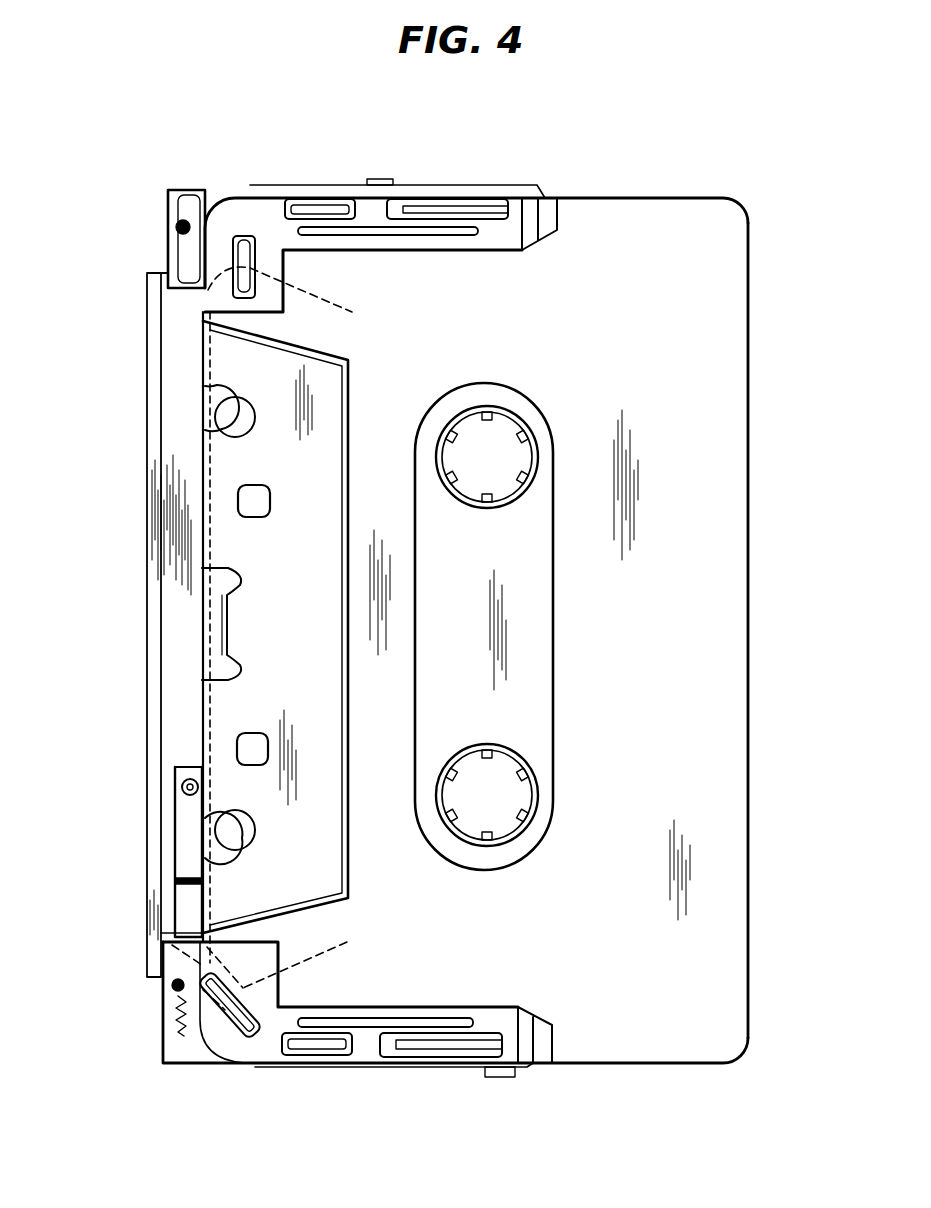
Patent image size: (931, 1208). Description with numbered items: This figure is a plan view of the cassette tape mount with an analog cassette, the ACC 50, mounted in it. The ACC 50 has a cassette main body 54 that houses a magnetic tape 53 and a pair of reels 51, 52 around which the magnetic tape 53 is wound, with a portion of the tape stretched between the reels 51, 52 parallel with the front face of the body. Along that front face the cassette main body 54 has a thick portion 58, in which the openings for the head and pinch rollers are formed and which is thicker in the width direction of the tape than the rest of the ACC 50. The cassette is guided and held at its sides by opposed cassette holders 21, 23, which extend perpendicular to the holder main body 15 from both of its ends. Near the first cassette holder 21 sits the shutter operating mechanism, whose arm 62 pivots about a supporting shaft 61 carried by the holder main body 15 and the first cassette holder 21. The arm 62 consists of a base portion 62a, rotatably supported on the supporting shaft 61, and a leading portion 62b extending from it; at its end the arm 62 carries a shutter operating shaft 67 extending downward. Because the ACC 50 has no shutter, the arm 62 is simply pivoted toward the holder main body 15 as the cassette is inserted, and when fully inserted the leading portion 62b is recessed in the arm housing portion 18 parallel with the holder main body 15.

The holder main body 15 is at (180, 650).
The arm housing portion 18 is at (175, 770).
The first cassette holder 21 is at (213, 1067).
The second cassette holder 23 is at (219, 191).
The ACC 50 is at (455, 630).
The reel 51 is at (519, 412).
The reel 52 is at (537, 793).
The magnetic tape 53 is at (205, 357).
The cassette main body 54 is at (727, 503).
The thick portion 58 is at (318, 437).
The supporting shaft 61 is at (183, 1035).
The arm 62 is at (188, 842).
The base portion 62a is at (243, 988).
The leading portion 62b is at (187, 865).
The shutter operating shaft 67 is at (188, 787).